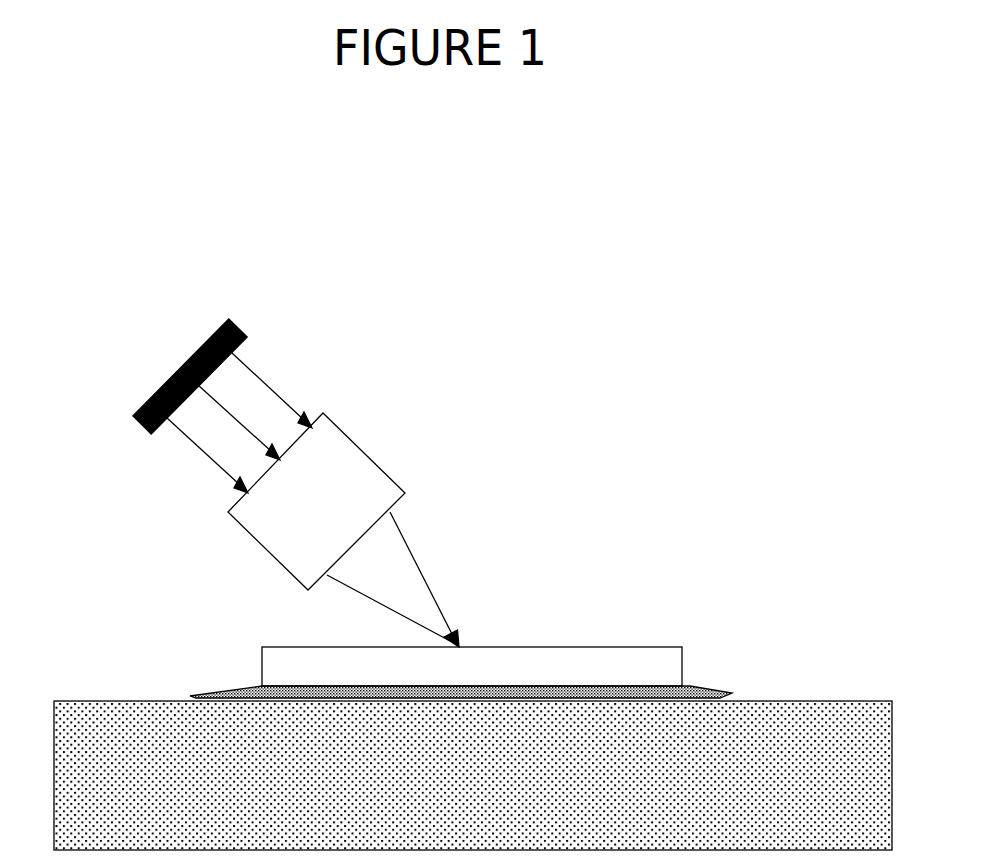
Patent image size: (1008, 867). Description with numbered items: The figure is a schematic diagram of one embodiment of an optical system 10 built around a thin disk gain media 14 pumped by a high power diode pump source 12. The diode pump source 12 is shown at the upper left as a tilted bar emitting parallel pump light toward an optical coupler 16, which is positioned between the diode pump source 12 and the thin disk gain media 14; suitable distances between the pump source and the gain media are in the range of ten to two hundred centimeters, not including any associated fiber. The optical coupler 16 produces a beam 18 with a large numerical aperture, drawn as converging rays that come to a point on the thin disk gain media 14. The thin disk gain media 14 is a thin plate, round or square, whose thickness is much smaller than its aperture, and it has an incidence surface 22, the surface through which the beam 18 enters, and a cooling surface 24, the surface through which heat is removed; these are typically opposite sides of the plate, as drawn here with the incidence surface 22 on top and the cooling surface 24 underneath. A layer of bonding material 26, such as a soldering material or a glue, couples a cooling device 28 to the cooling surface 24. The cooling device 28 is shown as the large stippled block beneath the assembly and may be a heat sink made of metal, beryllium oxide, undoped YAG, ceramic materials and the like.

The optical system 10 is at (474, 584).
The diode pump source 12 is at (203, 406).
The thin disk gain media 14 is at (472, 666).
The optical coupler 16 is at (316, 501).
The beam 18 is at (393, 579).
The incidence surface 22 is at (630, 642).
The cooling surface 24 is at (327, 687).
The bonding material 26 is at (702, 682).
The cooling device 28 is at (473, 775).